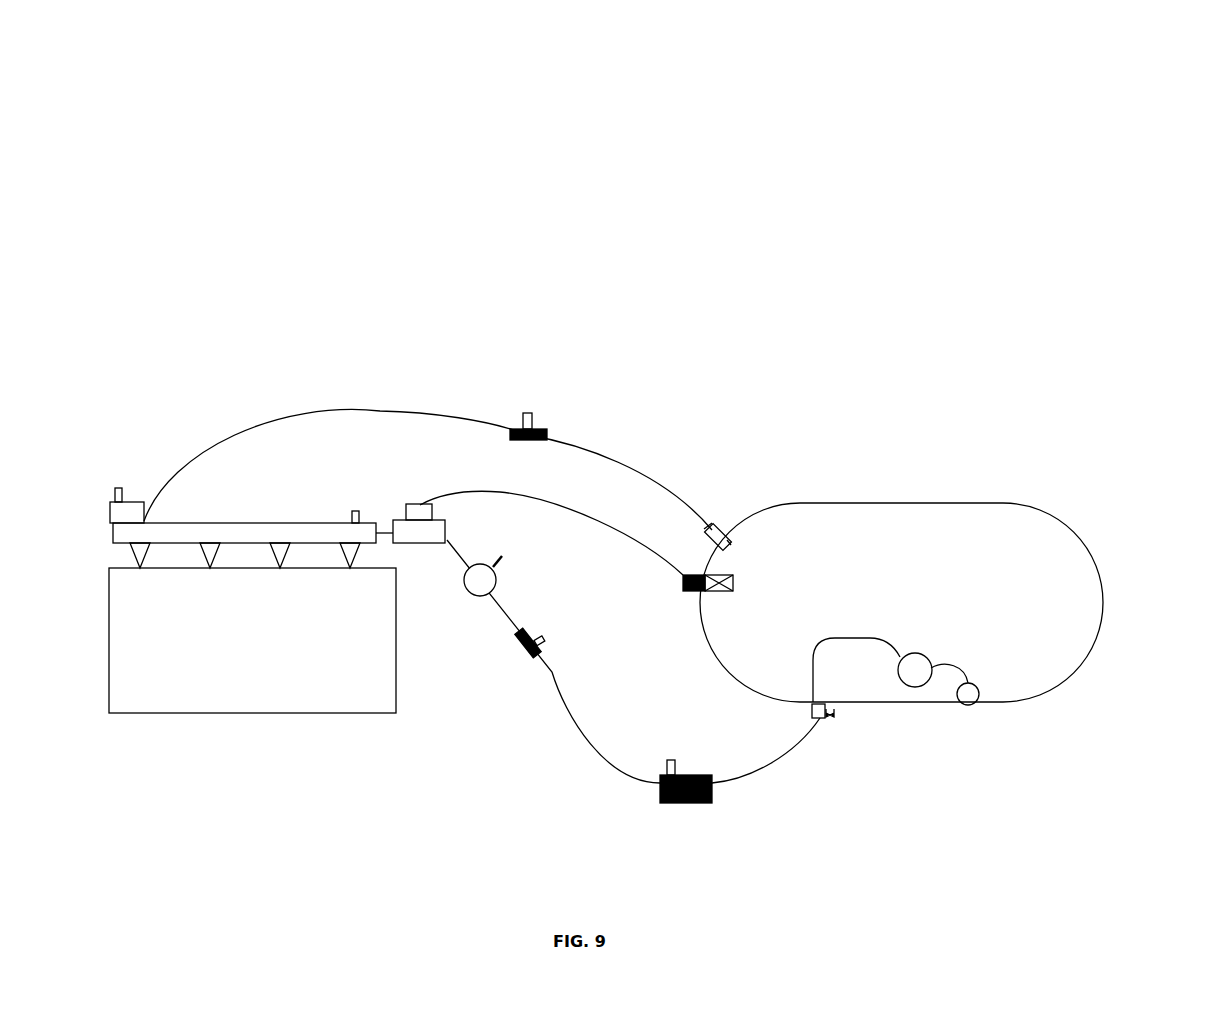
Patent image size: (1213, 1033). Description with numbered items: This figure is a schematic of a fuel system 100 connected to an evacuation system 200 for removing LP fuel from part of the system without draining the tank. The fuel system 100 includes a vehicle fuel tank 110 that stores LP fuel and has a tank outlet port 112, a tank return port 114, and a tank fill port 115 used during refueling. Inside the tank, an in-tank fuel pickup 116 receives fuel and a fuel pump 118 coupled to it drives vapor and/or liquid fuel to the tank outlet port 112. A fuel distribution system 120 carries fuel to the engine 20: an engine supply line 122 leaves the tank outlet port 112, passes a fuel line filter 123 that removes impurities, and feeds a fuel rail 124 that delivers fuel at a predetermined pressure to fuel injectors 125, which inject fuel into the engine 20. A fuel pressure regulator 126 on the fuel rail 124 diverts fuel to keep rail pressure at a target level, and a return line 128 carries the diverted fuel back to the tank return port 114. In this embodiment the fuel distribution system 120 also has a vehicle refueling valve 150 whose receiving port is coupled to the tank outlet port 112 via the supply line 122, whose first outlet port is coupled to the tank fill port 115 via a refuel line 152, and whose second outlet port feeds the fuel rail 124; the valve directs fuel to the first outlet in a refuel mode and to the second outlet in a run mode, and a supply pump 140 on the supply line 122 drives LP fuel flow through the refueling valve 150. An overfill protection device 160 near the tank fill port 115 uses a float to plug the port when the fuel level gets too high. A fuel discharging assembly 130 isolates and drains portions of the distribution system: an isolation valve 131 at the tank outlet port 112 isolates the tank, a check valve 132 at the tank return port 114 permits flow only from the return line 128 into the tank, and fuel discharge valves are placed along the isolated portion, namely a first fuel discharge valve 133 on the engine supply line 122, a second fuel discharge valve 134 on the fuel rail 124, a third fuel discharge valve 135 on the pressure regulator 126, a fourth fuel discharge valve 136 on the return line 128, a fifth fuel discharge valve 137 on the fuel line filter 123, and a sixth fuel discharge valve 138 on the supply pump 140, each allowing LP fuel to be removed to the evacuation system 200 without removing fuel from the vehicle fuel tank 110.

The evacuation system 200 is at (1112, 68).
The fuel system 100 is at (1062, 477).
The vehicle fuel tank 110 is at (1103, 598).
The tank outlet port 112 is at (810, 708).
The tank return port 114 is at (727, 540).
The tank fill port 115 is at (693, 573).
The in-tank fuel pickup 116 is at (973, 687).
The fuel pump 118 is at (918, 653).
The fuel distribution system 120 is at (189, 448).
The engine supply line 122 is at (573, 735).
The fuel line filter 123 is at (680, 805).
The fuel rail 124 is at (227, 523).
The fuel injectors 125 is at (133, 543).
The fuel pressure regulator 126 is at (112, 512).
The return line 128 is at (378, 411).
The fuel discharging assembly 130 is at (811, 811).
The isolation valve 131 is at (833, 717).
The check valve 132 is at (708, 525).
The first fuel discharge valve 133 is at (530, 653).
The second fuel discharge valve 134 is at (357, 511).
The third fuel discharge valve 135 is at (119, 488).
The fourth fuel discharge valve 136 is at (527, 413).
The fifth fuel discharge valve 137 is at (672, 760).
The sixth fuel discharge valve 138 is at (503, 558).
The supply pump 140 is at (481, 596).
The vehicle refueling valve 150 is at (408, 548).
The refuel line 152 is at (570, 508).
The overfill protection device 160 is at (713, 592).
The engine 20 is at (238, 713).